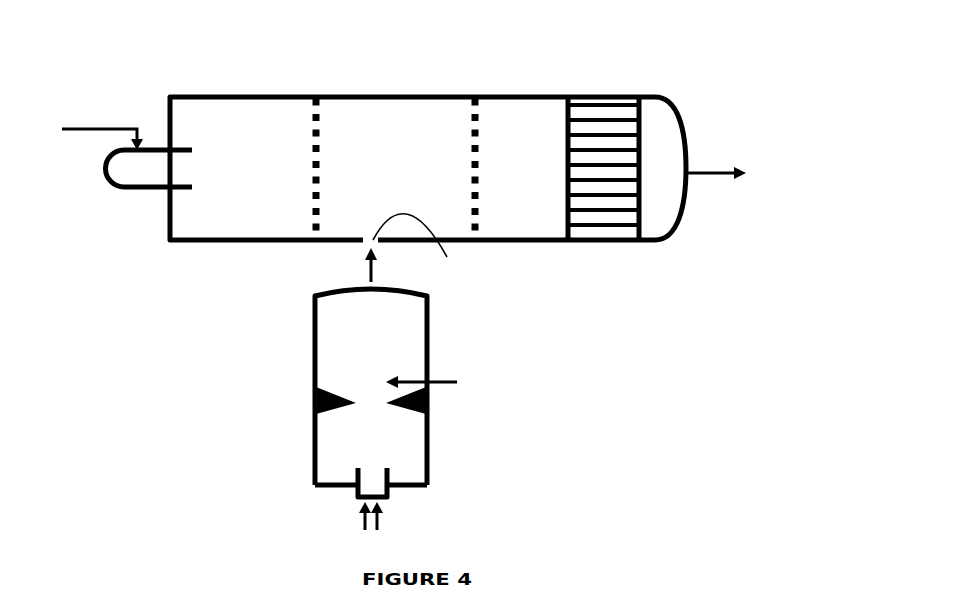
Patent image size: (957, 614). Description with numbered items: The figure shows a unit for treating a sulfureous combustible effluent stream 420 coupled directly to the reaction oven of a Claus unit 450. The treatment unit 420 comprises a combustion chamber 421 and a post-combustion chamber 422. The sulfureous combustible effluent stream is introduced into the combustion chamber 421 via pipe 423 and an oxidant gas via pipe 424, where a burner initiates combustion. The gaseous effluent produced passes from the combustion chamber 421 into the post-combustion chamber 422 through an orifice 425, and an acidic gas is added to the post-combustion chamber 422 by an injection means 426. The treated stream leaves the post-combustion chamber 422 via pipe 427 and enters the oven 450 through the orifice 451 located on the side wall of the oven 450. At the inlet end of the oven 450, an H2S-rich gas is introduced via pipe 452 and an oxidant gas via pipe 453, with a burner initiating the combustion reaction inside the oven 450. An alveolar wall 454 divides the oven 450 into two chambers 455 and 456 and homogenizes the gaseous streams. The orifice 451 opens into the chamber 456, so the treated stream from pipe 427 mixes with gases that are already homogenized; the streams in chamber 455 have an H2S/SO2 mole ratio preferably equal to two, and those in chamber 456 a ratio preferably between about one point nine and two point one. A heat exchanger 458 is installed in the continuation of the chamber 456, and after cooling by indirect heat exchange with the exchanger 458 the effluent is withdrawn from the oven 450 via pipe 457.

The unit for treating the sulfureous combustible effluent stream 420 is at (275, 327).
The combustion chamber 421 is at (392, 433).
The post-combustion chamber 422 is at (392, 349).
The pipe 423 is at (348, 517).
The pipe 424 is at (394, 517).
The orifice 425 is at (367, 400).
The injection means 426 is at (440, 385).
The pipe 427 is at (386, 265).
The oven of a Claus unit 450 is at (160, 54).
The orifice 451 is at (425, 244).
The pipe 452 is at (99, 167).
The pipe 453 is at (102, 129).
The alveolar wall 454 is at (320, 150).
The chamber 455 is at (243, 128).
The chamber 456 is at (448, 132).
The pipe 457 is at (717, 163).
The heat exchanger 458 is at (610, 128).